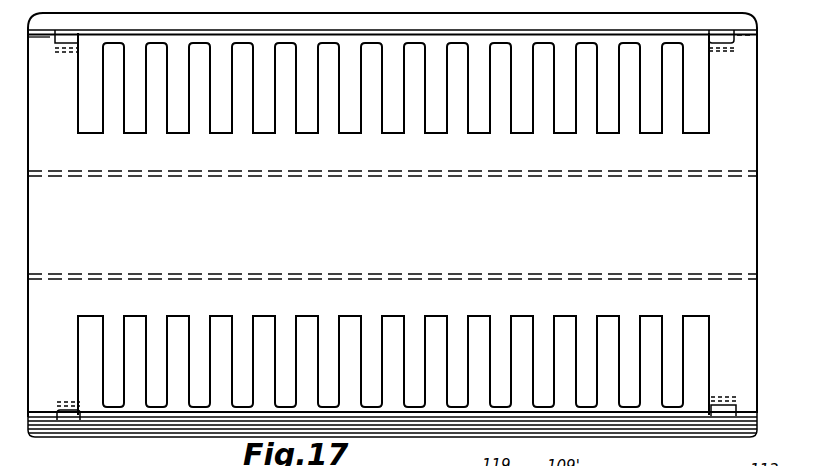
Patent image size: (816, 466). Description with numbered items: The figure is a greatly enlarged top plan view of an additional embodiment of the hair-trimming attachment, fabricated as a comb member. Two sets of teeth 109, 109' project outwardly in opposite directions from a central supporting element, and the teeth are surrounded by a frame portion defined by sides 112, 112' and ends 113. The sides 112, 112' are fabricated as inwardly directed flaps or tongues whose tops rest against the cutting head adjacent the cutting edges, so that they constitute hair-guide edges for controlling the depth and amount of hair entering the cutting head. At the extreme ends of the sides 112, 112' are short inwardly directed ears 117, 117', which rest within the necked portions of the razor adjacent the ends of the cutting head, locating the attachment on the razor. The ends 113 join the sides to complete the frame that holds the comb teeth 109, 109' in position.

The teeth 109 is at (393, 73).
The teeth 109' is at (393, 387).
The side 112 is at (392, 24).
The side 112' is at (392, 434).
The ends 113 is at (35, 386).
The ear 117 is at (389, 47).
The ear 117' is at (396, 428).